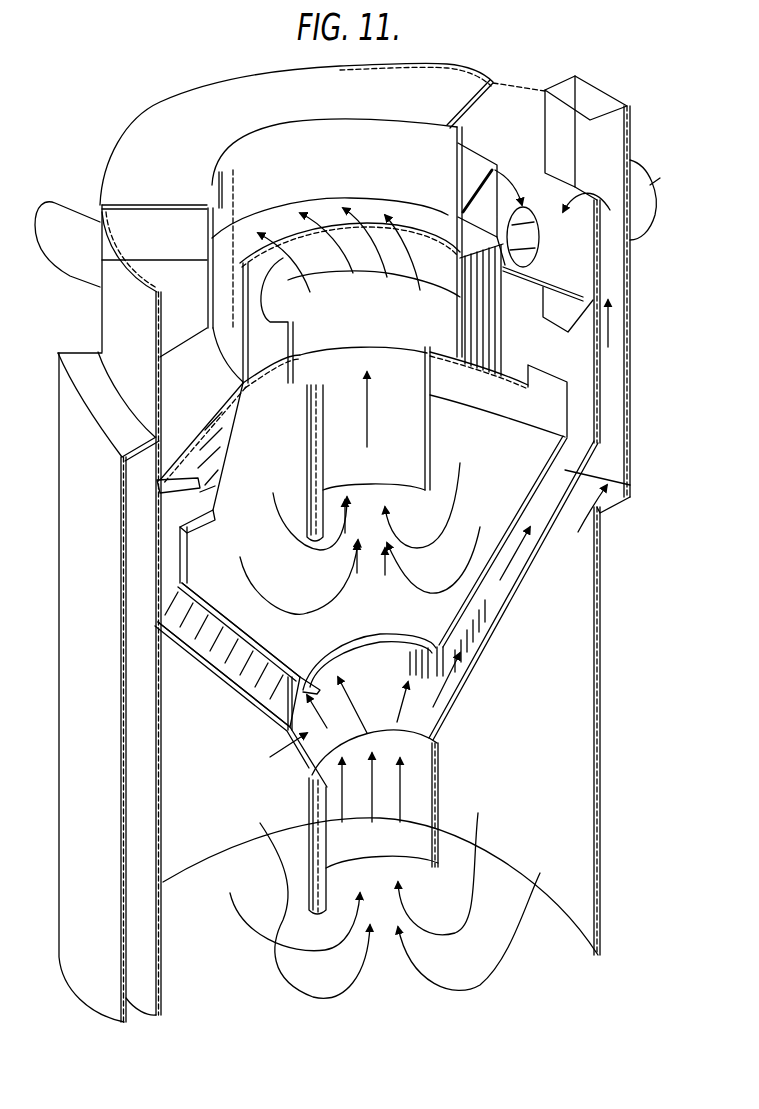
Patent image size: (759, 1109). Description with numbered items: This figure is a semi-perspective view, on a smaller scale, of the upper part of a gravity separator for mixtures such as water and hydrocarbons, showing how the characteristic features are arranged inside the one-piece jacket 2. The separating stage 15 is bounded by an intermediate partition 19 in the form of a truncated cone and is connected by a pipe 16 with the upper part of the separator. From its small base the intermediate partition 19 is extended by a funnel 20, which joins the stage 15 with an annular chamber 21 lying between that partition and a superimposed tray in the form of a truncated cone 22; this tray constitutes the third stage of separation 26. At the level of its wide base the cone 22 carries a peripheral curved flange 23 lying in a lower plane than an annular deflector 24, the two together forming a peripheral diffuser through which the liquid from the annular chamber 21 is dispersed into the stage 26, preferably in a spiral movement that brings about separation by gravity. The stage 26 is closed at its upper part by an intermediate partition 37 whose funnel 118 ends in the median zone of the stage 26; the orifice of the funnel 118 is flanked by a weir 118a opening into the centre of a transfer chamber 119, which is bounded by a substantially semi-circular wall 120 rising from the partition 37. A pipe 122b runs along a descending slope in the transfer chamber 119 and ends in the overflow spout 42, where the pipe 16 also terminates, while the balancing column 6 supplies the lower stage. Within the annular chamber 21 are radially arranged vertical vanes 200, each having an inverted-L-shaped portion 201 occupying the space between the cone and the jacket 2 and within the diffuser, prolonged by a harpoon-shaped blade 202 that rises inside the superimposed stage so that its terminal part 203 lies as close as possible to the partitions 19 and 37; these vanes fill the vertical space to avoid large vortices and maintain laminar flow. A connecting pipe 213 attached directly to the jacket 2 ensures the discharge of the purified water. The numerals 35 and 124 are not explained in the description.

The jacket 2 is at (162, 822).
The balancing column 6 is at (128, 717).
The separating stage 15 is at (380, 864).
The pipe 16 is at (607, 421).
The intermediate partition 19 is at (263, 735).
The funnel 20 is at (311, 806).
The annular chamber 21 is at (330, 730).
The truncated cone 22 is at (298, 660).
The peripheral curved flange 23 is at (215, 516).
The annular deflector 24 is at (200, 470).
The third stage of separation 26 is at (360, 538).
The flange 35 is at (210, 490).
The intermediate partition 37 is at (225, 420).
The overflow spout 42 is at (524, 110).
The funnel 118 is at (318, 481).
The weir 118a is at (289, 295).
The transfer chamber 119 is at (378, 159).
The wall 120 is at (222, 305).
The pipe 122b is at (165, 277).
The port 124 is at (636, 228).
The vertical vanes 200 is at (453, 628).
The portion 201 is at (193, 560).
The blade 202 is at (215, 440).
The terminal part 203 is at (246, 383).
The connecting pipe 213 is at (82, 282).